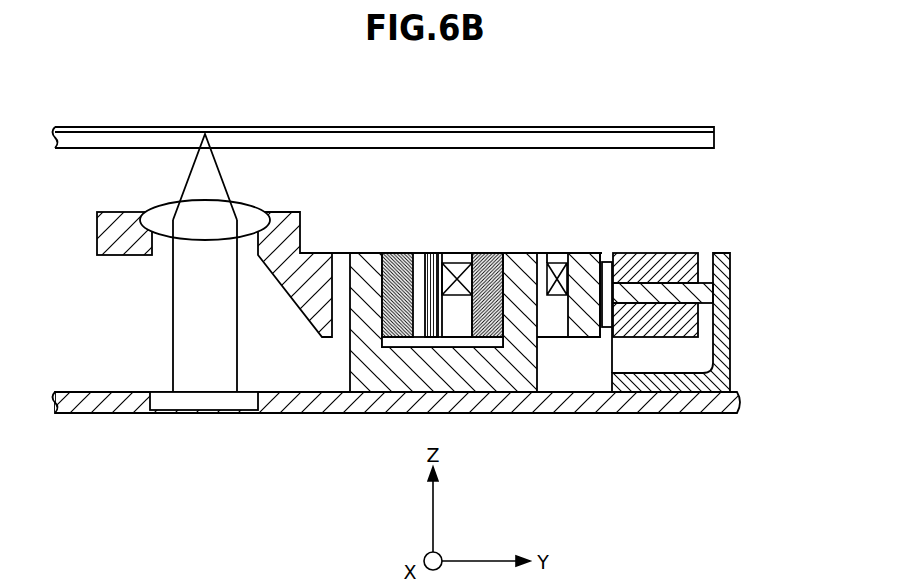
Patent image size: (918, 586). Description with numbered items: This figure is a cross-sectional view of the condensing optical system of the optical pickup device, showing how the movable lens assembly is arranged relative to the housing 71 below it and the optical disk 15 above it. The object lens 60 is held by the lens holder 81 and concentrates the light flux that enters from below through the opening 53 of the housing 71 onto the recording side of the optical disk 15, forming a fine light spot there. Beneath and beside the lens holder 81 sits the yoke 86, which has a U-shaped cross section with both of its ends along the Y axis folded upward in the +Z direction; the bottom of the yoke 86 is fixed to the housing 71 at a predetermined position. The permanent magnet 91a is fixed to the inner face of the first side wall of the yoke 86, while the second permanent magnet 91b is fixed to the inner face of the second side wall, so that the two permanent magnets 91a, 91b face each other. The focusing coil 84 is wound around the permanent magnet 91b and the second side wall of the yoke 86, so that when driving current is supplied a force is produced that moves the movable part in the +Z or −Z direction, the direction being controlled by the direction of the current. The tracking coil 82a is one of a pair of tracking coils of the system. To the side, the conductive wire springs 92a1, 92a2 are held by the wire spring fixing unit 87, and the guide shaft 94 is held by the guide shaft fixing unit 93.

The optical disk 15 is at (618, 126).
The lens holder 81 is at (108, 212).
The object lens 60 is at (165, 203).
The housing 71 is at (83, 392).
The opening 53 is at (163, 412).
The yoke 86 is at (347, 373).
The permanent magnet 91a is at (405, 253).
The tracking coil 82a is at (437, 253).
The focusing coil 84 is at (448, 253).
The permanent magnet 91b is at (492, 253).
The conductive wire spring 92a1 is at (603, 253).
The conductive wire spring 92a2 is at (628, 388).
The wire spring fixing unit 87 is at (663, 252).
The guide shaft 94 is at (702, 280).
The guide shaft fixing unit 93 is at (692, 324).